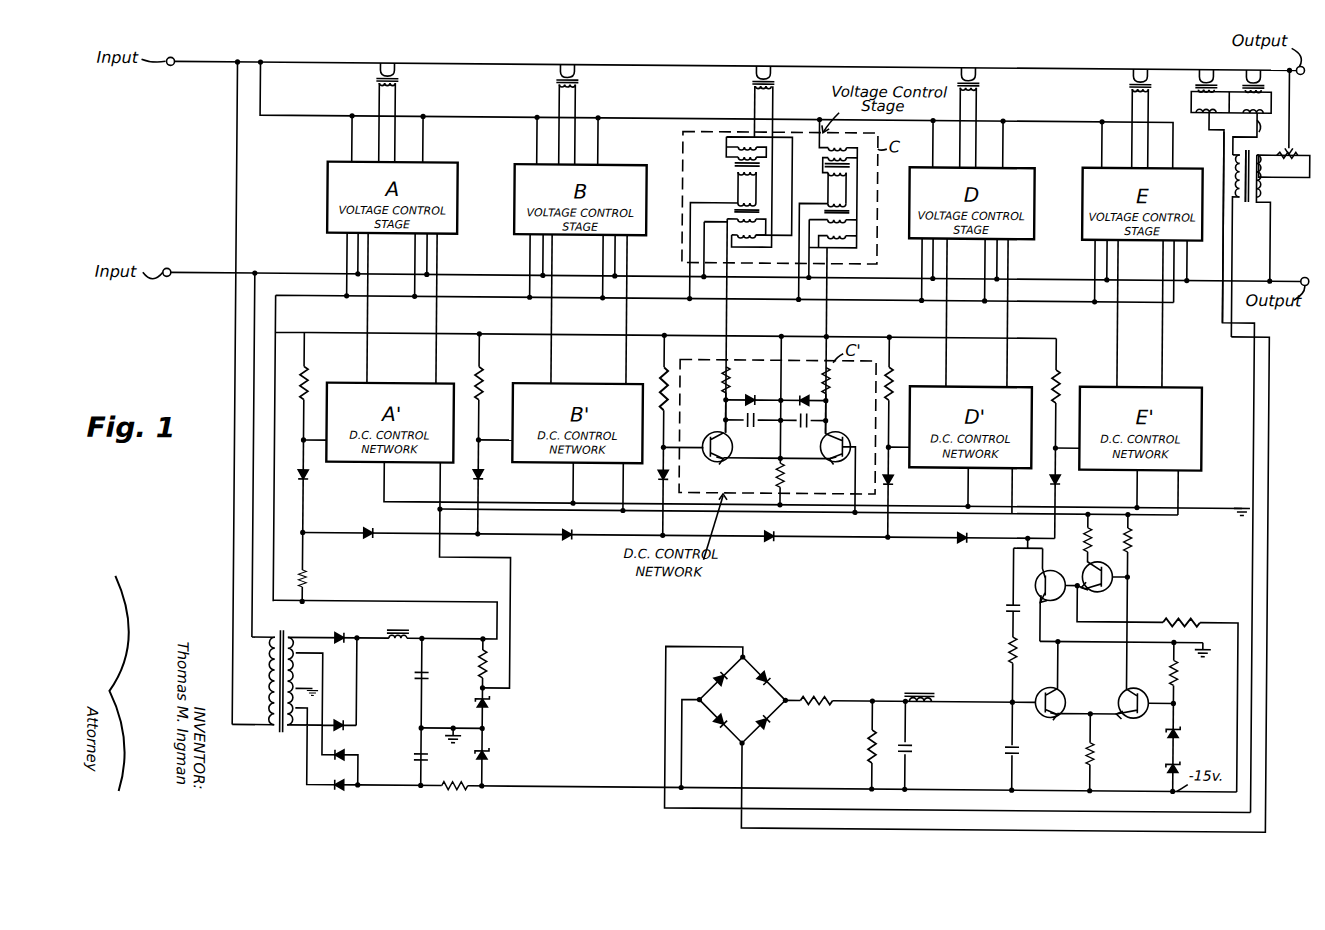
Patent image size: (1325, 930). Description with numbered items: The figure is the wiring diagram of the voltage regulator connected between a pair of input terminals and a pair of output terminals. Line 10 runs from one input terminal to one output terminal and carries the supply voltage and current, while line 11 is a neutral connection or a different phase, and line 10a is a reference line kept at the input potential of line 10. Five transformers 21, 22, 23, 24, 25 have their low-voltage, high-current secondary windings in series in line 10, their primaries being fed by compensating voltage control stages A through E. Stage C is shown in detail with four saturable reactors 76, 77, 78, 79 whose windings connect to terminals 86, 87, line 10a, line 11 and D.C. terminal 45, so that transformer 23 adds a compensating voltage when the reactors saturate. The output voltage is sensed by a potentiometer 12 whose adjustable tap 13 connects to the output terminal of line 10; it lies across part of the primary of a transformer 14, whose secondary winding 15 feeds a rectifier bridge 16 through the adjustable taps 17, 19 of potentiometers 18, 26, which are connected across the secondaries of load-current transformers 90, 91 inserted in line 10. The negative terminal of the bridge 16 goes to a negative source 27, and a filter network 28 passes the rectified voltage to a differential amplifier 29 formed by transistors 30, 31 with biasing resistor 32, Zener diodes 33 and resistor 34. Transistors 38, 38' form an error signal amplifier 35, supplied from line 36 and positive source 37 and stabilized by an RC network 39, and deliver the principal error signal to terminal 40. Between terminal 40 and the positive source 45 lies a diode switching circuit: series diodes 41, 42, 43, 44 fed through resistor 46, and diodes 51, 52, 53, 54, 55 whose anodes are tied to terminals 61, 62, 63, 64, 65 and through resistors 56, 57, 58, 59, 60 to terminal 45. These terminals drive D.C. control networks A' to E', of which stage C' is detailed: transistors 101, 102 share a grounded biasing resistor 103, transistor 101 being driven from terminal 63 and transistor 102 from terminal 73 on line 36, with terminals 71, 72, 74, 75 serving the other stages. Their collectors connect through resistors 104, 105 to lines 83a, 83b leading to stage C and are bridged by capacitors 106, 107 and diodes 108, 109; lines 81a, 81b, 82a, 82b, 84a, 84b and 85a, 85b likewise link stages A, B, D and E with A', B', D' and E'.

The line 10 is at (685, 60).
The reference line 10a is at (642, 113).
The line 11 is at (460, 271).
The potentiometer 12 is at (1291, 142).
The adjustable tap 13 is at (1275, 92).
The transformer 14 is at (1250, 194).
The secondary winding 15 is at (1240, 163).
The rectifier bridge 16 is at (966, 582).
The adjustable tap 17 is at (1224, 135).
The potentiometer 18 is at (1229, 463).
The adjustable tap 19 is at (1271, 131).
The transformer 21 is at (400, 83).
The transformer 22 is at (580, 82).
The transformer 23 is at (777, 82).
The transformer 24 is at (983, 84).
The transformer 25 is at (1129, 84).
The potentiometer 26 is at (1245, 134).
The source of fixed potential 27 is at (490, 782).
The filter network 28 is at (968, 748).
The differential amplifier 29 is at (1142, 752).
The transistor 30 is at (1060, 684).
The transistor 31 is at (1148, 677).
The biasing resistor 32 is at (1092, 744).
The Zener diodes 33 is at (1187, 762).
The resistor 34 is at (1183, 662).
The error signal amplifier 35 is at (1157, 689).
The line 36 is at (1164, 509).
The source of positive voltage potential 37 is at (480, 698).
The transistor 38 is at (1103, 560).
The transistor 38' is at (1056, 594).
The RC network 39 is at (1015, 640).
The terminal 40 is at (1030, 538).
The diode 41 is at (968, 536).
The diode 42 is at (778, 538).
The diode 43 is at (580, 535).
The diode 44 is at (374, 535).
The source of positive voltage potential 45 is at (488, 632).
The resistor 46 is at (310, 578).
The diode 51 is at (313, 478).
The diode 52 is at (488, 477).
The diode 53 is at (664, 474).
The diode 54 is at (897, 478).
The diode 55 is at (1064, 477).
The resistor 56 is at (309, 380).
The resistor 57 is at (486, 377).
The resistor 58 is at (666, 370).
The resistor 59 is at (893, 372).
The resistor 60 is at (1060, 372).
The terminal 61 is at (303, 438).
The terminal 62 is at (483, 436).
The terminal 63 is at (666, 440).
The terminal 64 is at (893, 440).
The terminal 65 is at (1060, 440).
The terminal 71 is at (442, 507).
The terminal 72 is at (628, 508).
The terminal 73 is at (859, 508).
The terminal 74 is at (1016, 507).
The terminal 75 is at (1183, 486).
The saturable reactor 76 is at (729, 160).
The saturable reactor 77 is at (739, 206).
The saturable reactor 78 is at (829, 163).
The saturable reactor 79 is at (847, 231).
The line 81a is at (371, 330).
The line 81b is at (440, 330).
The line 82a is at (555, 320).
The line 82b is at (630, 330).
The line 83a is at (730, 330).
The line 83b is at (830, 330).
The line 84a is at (950, 330).
The line 84b is at (1011, 330).
The line 85a is at (1121, 332).
The line 85b is at (1166, 332).
The terminal 86 is at (775, 158).
The terminal 87 is at (754, 128).
The transformer 90 is at (1196, 76).
The transformer 91 is at (1265, 73).
The transistor 101 is at (707, 436).
The transistor 102 is at (848, 432).
The biasing resistor 103 is at (787, 470).
The resistor 104 is at (727, 380).
The resistor 105 is at (845, 369).
The capacitor 106 is at (758, 424).
The capacitor 107 is at (811, 424).
The diode 108 is at (757, 390).
The diode 109 is at (808, 390).